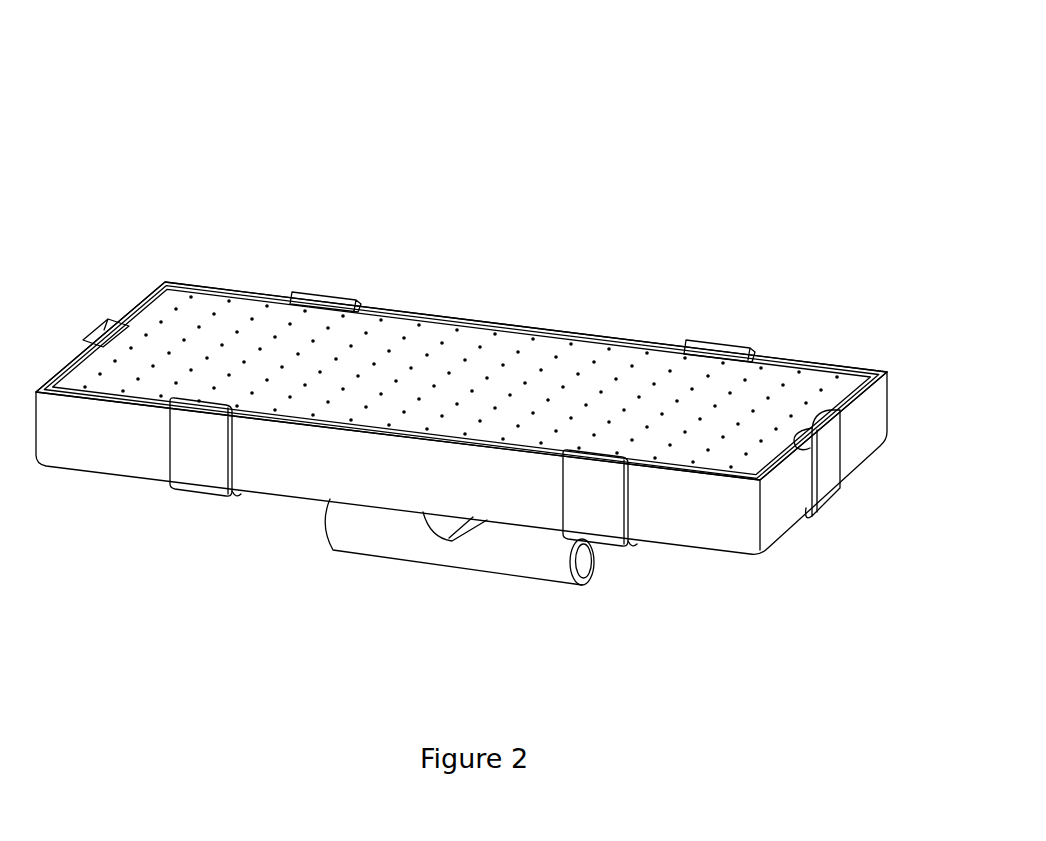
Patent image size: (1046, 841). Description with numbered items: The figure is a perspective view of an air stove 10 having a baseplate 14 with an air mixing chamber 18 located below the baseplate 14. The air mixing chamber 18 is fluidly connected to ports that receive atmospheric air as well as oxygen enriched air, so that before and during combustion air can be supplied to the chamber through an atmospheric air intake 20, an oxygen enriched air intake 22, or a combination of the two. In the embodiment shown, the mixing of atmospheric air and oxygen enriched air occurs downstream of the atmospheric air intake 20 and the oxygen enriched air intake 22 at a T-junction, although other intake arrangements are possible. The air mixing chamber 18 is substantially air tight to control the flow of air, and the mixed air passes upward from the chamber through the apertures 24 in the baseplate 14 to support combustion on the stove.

The air stove 10 is at (310, 148).
The baseplate 14 is at (567, 357).
The air mixing chamber 18 is at (278, 467).
The atmospheric air intake 20 is at (580, 547).
The oxygen enriched air intake 22 is at (343, 530).
The apertures 24 is at (453, 332).